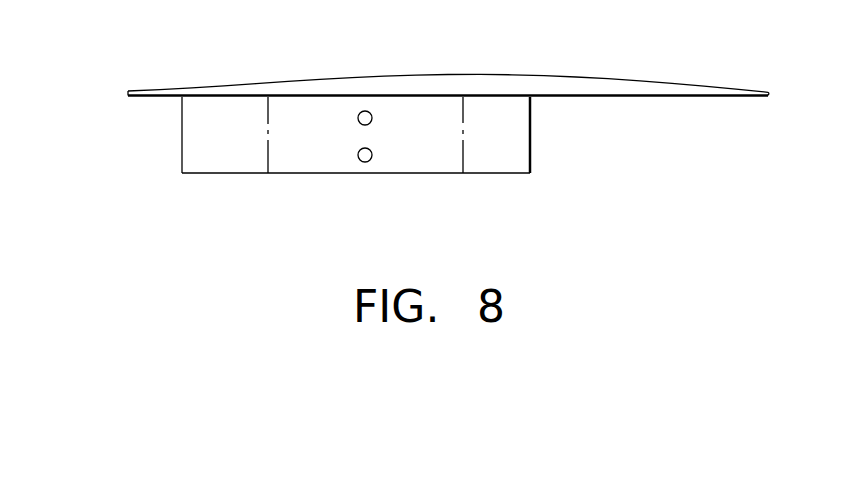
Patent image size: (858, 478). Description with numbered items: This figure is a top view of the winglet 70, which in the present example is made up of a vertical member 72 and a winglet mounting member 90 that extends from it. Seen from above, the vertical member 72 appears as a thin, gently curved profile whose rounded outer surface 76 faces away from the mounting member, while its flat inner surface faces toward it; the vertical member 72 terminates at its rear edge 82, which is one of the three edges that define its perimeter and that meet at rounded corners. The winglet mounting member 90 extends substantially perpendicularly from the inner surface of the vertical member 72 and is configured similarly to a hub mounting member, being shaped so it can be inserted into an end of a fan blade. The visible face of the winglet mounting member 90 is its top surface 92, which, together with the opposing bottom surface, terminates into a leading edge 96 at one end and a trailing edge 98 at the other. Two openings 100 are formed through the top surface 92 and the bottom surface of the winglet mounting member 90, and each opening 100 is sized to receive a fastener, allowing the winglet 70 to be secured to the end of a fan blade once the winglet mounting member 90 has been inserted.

The winglet 70 is at (172, 48).
The vertical member 72 is at (366, 79).
The outer surface 76 is at (452, 73).
The rear edge 82 is at (769, 94).
The winglet mounting member 90 is at (283, 120).
The top surface 92 is at (435, 144).
The leading edge 96 is at (182, 138).
The trailing edge 98 is at (532, 140).
The openings 100 is at (364, 163).